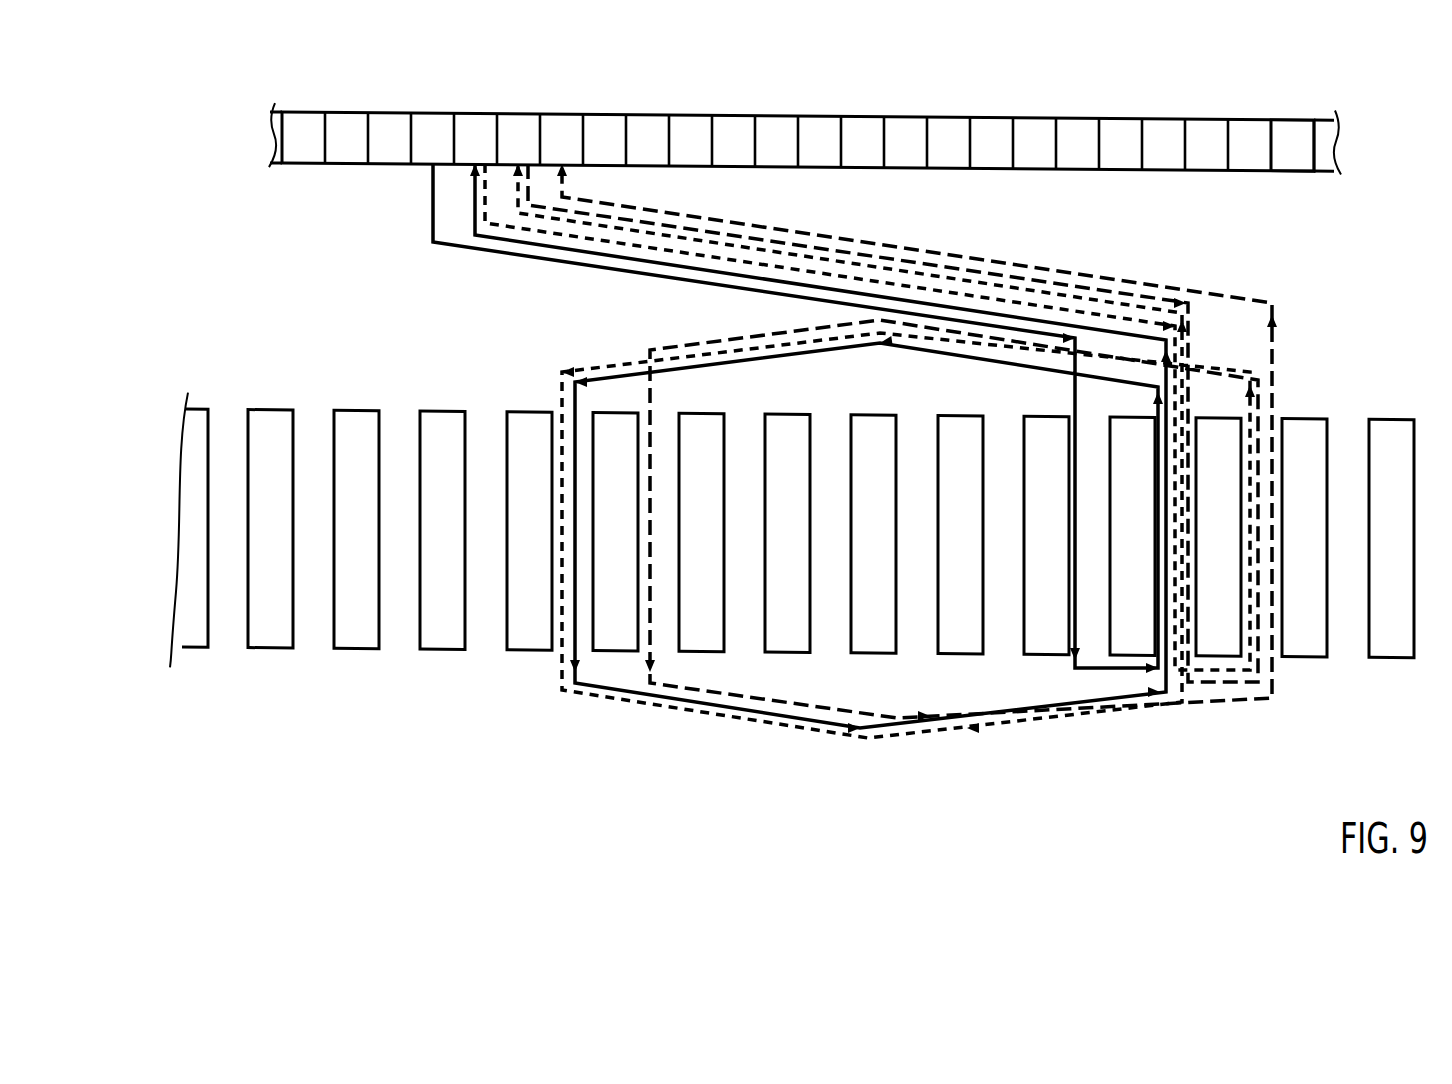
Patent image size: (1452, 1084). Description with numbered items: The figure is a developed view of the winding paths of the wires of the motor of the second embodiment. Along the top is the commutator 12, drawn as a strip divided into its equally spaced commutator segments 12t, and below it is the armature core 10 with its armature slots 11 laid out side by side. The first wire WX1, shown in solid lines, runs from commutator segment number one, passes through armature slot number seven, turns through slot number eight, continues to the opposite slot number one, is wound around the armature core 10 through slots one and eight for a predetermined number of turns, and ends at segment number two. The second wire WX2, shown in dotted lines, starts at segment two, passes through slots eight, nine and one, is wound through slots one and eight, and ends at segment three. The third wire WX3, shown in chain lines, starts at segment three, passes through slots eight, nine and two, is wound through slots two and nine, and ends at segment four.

The armature core 10 is at (776, 530).
The armature slot 11 is at (296, 592).
The commutator 12 is at (1322, 103).
The commutator segment 12t is at (1296, 152).
The first wire WX1 is at (858, 290).
The second wire WX2 is at (734, 248).
The third wire WX3 is at (1205, 292).